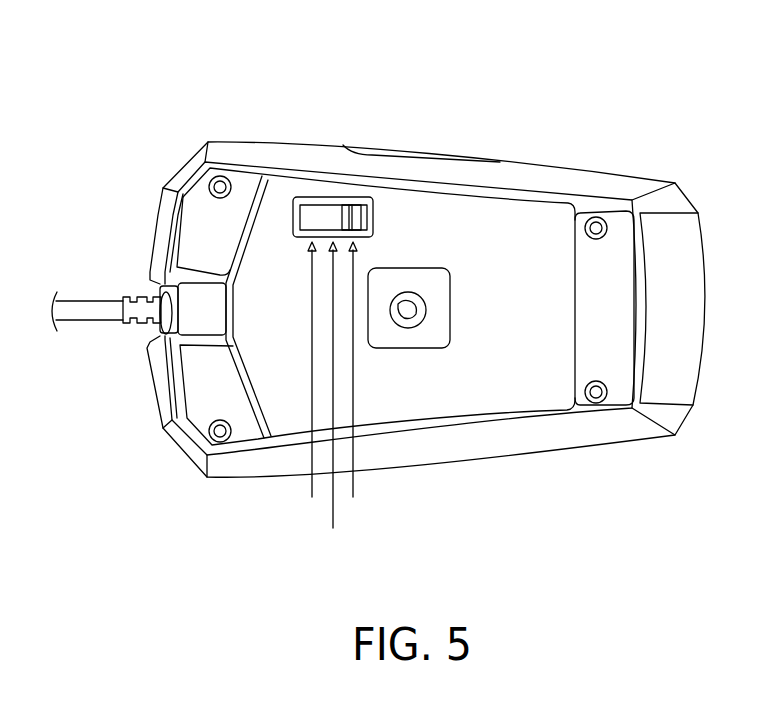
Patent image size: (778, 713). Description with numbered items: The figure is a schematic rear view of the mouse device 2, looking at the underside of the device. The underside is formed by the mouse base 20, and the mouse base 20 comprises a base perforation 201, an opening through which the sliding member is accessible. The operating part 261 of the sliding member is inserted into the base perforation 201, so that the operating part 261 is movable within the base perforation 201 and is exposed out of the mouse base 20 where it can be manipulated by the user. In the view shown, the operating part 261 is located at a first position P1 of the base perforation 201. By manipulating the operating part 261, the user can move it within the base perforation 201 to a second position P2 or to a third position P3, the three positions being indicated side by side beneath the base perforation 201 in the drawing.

The mouse device 2 is at (447, 45).
The mouse base 20 is at (527, 215).
The base perforation 201 is at (322, 210).
The operating part 261 is at (357, 210).
The first position P1 is at (352, 385).
The second position P2 is at (333, 401).
The third position P3 is at (311, 385).